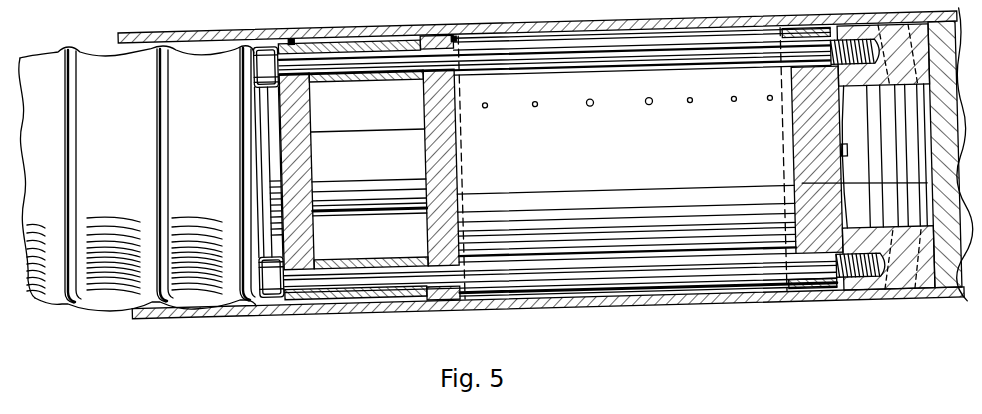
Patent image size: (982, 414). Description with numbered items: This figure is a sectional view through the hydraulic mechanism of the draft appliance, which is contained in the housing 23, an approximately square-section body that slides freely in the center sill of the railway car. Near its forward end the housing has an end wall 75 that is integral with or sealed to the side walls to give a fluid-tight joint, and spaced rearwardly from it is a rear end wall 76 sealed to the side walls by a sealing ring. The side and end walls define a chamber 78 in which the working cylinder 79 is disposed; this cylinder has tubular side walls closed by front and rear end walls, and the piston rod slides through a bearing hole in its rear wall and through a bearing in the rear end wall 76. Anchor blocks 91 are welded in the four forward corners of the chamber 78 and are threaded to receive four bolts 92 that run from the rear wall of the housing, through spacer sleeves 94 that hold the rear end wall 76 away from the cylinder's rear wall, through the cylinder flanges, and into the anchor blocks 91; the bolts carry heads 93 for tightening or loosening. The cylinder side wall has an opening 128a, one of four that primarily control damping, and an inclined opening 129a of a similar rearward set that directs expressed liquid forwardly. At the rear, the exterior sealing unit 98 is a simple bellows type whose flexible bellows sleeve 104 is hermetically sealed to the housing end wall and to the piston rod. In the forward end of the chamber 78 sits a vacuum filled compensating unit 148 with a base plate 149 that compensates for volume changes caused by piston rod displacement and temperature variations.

The housing 23 is at (117, 2).
The flexible bellows sleeve 104 is at (106, 42).
The exterior sealing unit 98 is at (68, 304).
The bolt heads 93 is at (267, 196).
The spacer sleeves 94 is at (352, 174).
The rear end wall 76 is at (441, 152).
The chamber 78 is at (369, 169).
The bolts 92 is at (488, 30).
The working cylinder 79 is at (576, 224).
The opening 129a is at (574, 116).
The opening 128a is at (656, 113).
The vacuum filled compensating unit 148 is at (765, 112).
The base plate 149 is at (841, 175).
The anchor blocks 91 is at (806, 3).
The end wall 75 is at (822, 285).